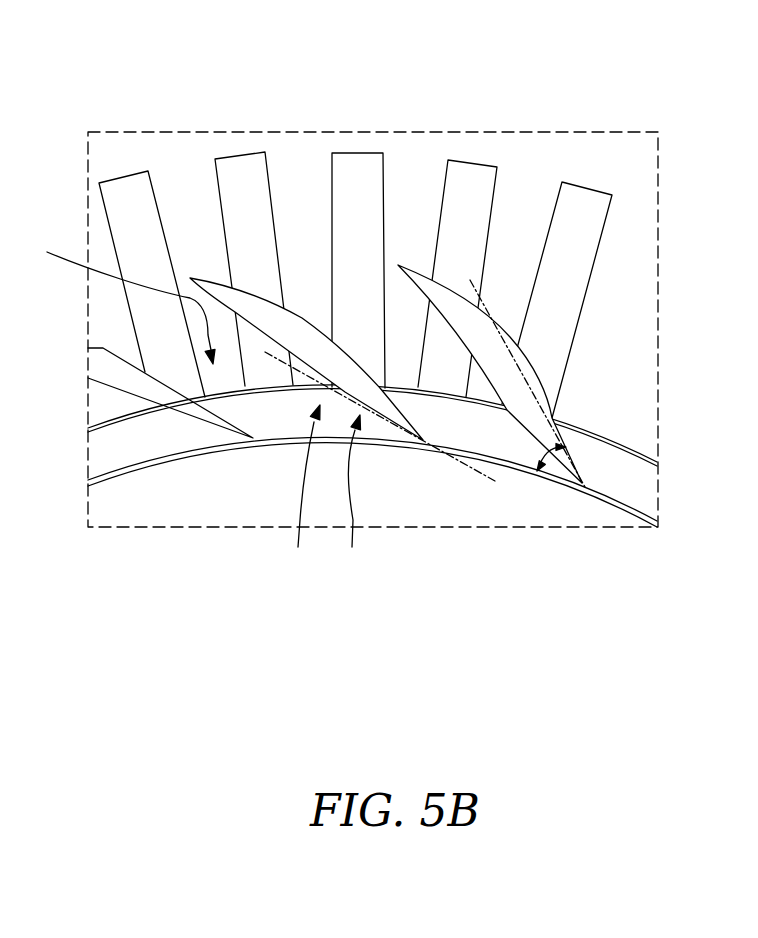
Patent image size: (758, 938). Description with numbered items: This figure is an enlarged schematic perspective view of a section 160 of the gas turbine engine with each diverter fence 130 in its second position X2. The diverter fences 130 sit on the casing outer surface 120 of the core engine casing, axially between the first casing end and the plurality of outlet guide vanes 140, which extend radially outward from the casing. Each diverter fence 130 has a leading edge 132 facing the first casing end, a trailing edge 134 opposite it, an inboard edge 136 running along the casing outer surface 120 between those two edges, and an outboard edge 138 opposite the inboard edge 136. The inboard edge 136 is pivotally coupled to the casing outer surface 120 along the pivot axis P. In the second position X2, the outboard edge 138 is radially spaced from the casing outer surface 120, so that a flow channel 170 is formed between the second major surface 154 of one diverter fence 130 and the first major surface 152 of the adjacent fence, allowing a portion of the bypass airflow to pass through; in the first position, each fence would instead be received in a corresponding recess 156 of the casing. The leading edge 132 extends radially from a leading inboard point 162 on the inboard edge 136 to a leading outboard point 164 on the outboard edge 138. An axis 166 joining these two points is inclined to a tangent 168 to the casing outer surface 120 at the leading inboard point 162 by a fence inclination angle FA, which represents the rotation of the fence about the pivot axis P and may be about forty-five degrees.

The casing outer surface 120 is at (634, 446).
The diverter fence 130 is at (348, 492).
The leading edge 132 is at (318, 331).
The trailing edge 134 is at (188, 278).
The inboard edge 136 is at (553, 420).
The outboard edge 138 is at (262, 307).
The outlet guide vane 140 is at (237, 163).
The first major surface 152 is at (258, 316).
The second major surface 154 is at (122, 378).
The recess 156 is at (296, 490).
The section 160 is at (505, 44).
The leading inboard point 162 is at (585, 484).
The leading outboard point 164 is at (498, 310).
The axis 166 is at (472, 282).
The tangent 168 is at (500, 478).
The flow channel 170 is at (112, 301).
The pivot axis P is at (493, 480).
The fence inclination angle FA is at (538, 472).
The second position X2 is at (622, 330).